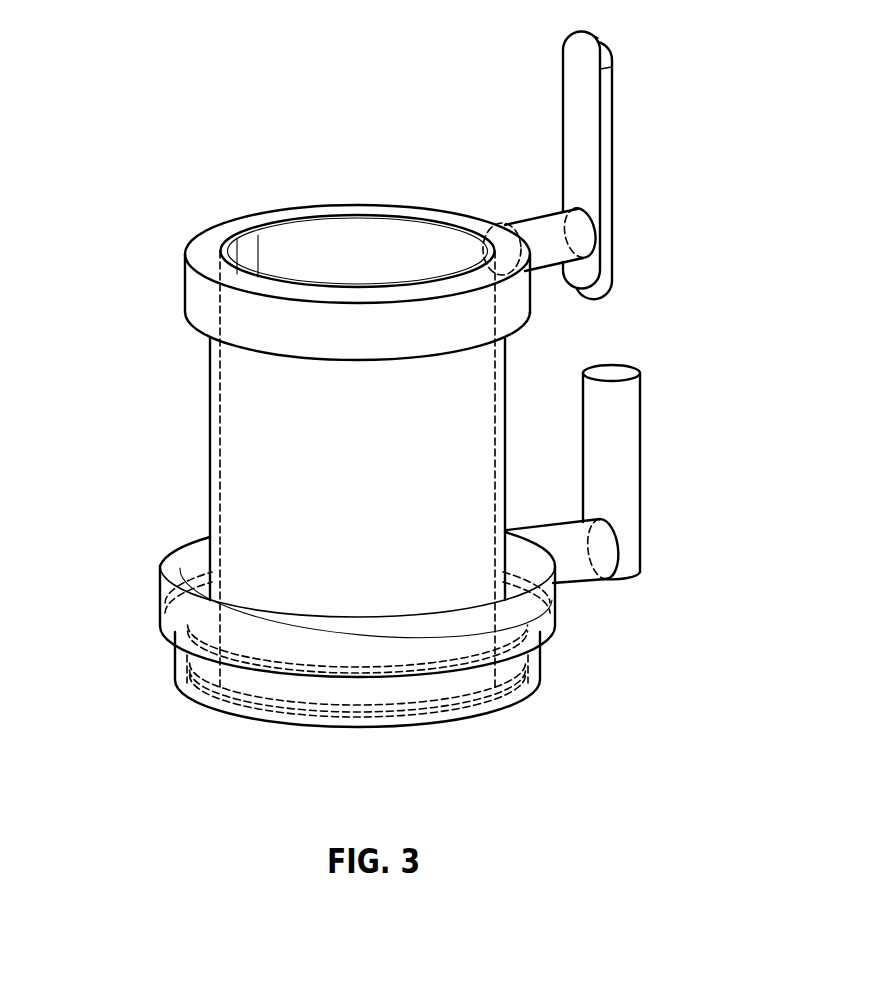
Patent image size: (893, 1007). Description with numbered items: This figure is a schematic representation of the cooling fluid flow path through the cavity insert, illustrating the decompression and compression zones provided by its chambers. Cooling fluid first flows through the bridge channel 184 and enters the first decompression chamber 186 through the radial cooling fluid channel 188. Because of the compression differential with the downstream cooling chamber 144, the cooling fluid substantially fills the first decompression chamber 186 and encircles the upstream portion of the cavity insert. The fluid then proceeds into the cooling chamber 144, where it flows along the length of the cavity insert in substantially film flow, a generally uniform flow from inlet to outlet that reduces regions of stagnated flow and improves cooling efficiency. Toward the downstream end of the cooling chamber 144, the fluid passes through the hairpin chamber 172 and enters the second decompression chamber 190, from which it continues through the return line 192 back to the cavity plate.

The cooling chamber 144 is at (472, 410).
The hairpin chamber 172 is at (185, 690).
The bridge channel 184 is at (588, 150).
The first decompression chamber 186 is at (218, 242).
The radial cooling fluid channel 188 is at (547, 258).
The second decompression chamber 190 is at (552, 600).
The return line 192 is at (618, 550).